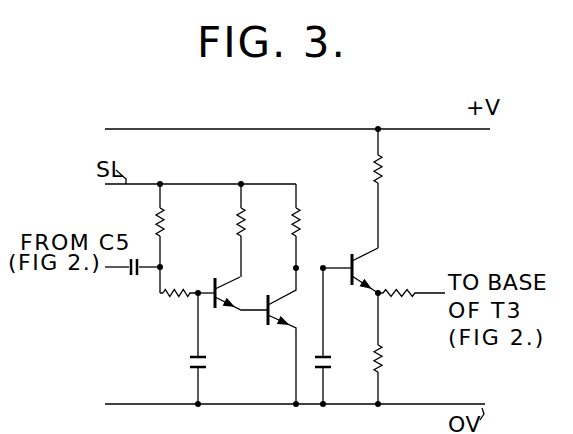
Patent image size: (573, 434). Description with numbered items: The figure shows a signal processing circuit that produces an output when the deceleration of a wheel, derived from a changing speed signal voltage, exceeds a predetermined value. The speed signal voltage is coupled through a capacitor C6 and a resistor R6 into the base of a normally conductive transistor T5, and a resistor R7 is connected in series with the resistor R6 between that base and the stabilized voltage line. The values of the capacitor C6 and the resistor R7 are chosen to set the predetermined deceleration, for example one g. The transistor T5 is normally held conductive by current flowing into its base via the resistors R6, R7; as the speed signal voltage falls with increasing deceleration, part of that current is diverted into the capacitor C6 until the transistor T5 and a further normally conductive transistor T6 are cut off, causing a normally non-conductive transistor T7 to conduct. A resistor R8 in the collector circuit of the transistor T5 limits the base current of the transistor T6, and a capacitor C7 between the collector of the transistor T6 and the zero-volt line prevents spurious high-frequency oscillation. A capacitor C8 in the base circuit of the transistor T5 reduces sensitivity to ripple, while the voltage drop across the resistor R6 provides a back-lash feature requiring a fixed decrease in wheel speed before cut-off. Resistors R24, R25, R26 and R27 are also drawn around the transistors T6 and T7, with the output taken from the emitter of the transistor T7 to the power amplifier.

The resistor R7 is at (177, 238).
The resistor R6 is at (179, 282).
The resistor R8 is at (257, 230).
The resistor R24 is at (319, 226).
The resistor R25 is at (403, 188).
The resistor R26 is at (403, 348).
The resistor R27 is at (401, 300).
The capacitor C6 is at (128, 272).
The capacitor C7 is at (336, 336).
The capacitor C8 is at (214, 348).
The transistor T5 is at (230, 297).
The transistor T6 is at (277, 317).
The transistor T7 is at (364, 270).